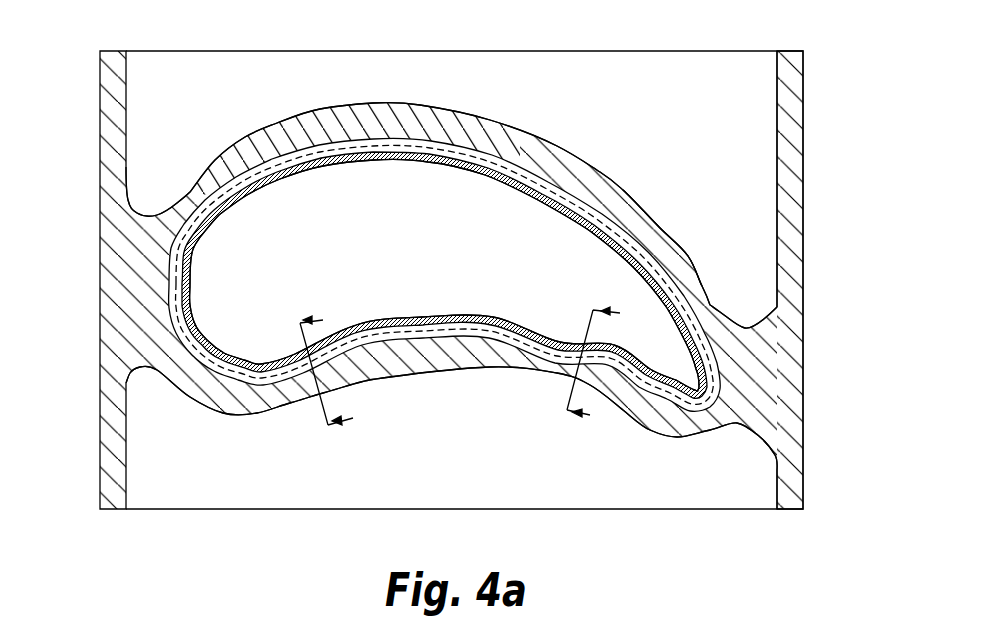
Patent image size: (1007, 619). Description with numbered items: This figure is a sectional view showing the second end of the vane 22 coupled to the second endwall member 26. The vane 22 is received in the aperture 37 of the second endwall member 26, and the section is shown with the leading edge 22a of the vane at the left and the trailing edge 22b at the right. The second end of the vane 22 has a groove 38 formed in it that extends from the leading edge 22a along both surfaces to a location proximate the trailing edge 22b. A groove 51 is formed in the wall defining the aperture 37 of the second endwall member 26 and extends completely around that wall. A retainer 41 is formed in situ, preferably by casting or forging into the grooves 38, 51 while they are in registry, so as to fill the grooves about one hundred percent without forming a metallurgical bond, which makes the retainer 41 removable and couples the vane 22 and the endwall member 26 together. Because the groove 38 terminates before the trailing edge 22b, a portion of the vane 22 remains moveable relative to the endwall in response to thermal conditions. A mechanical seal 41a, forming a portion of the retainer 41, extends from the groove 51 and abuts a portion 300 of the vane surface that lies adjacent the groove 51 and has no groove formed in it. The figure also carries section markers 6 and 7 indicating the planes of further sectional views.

The vane 22 is at (187, 193).
The leading edge 22a is at (171, 263).
The trailing edge 22b is at (712, 406).
The second endwall member 26 is at (793, 153).
The aperture 37 is at (411, 254).
The groove 38 is at (500, 325).
The retainer 41 is at (306, 140).
The mechanical seal 41a is at (617, 258).
The groove 51 is at (530, 167).
The portion of the surface of the vane 300 is at (777, 308).
The section line 6- 6 is at (335, 365).
The section line 7- 7 is at (604, 370).